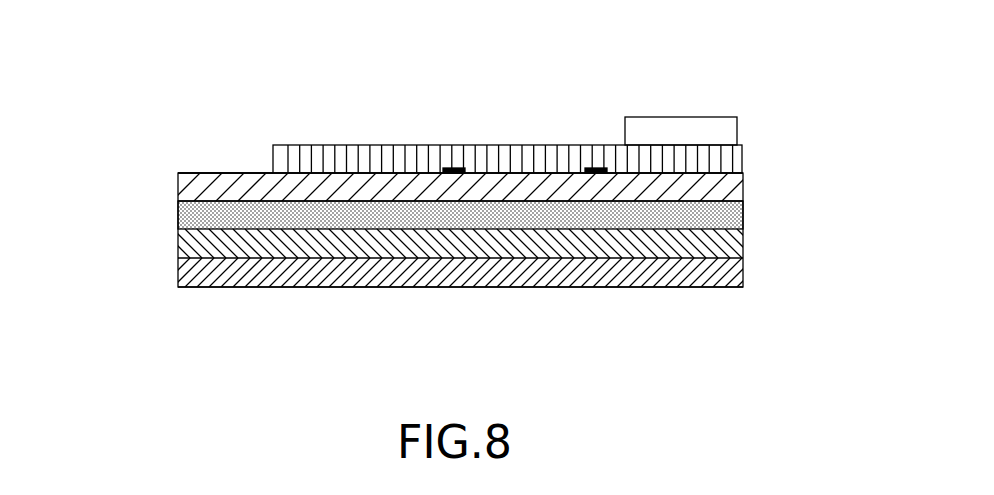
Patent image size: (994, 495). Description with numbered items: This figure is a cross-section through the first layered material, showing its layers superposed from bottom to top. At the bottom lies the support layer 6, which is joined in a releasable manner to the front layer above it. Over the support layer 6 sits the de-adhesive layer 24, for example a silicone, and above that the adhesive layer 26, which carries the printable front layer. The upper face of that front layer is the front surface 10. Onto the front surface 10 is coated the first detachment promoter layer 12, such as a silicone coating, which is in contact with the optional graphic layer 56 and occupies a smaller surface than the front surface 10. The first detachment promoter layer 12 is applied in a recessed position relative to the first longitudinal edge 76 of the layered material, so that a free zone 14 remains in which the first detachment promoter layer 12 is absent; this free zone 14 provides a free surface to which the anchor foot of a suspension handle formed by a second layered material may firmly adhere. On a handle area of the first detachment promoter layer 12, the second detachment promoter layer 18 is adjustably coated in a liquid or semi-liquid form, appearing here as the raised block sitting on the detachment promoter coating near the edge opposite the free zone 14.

The first longitudinal edge 76 is at (175, 171).
The front surface 10 is at (222, 170).
The free zone 14 is at (244, 153).
The first detachment promoter layer 12 is at (748, 190).
The adhesive layer 26 is at (176, 213).
The de-adhesive layer 24 is at (750, 240).
The support layer 6 is at (685, 289).
The graphic layer 56 is at (453, 165).
The second detachment promoter layer 18 is at (741, 130).